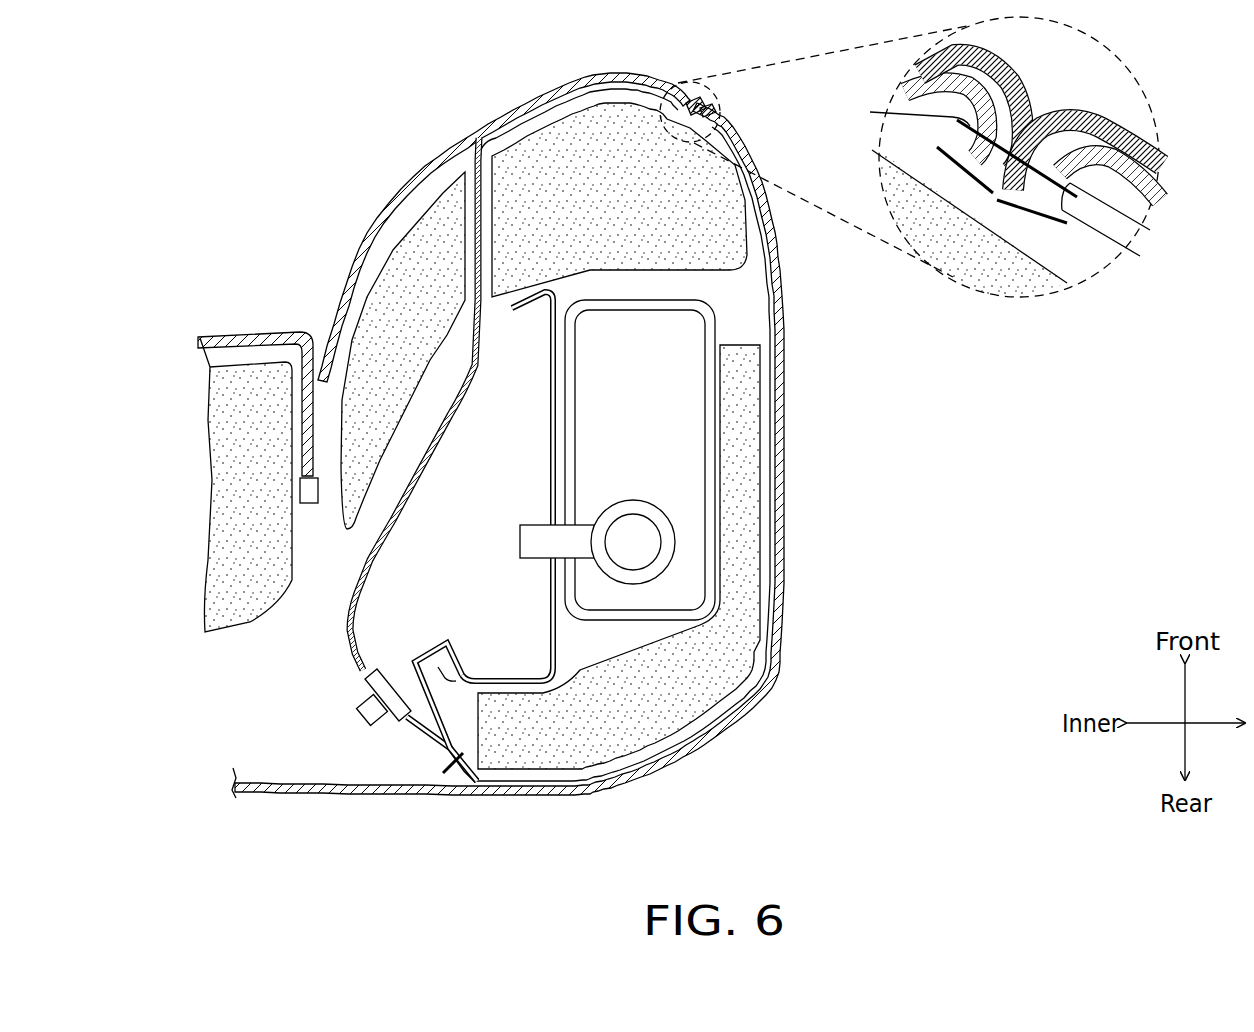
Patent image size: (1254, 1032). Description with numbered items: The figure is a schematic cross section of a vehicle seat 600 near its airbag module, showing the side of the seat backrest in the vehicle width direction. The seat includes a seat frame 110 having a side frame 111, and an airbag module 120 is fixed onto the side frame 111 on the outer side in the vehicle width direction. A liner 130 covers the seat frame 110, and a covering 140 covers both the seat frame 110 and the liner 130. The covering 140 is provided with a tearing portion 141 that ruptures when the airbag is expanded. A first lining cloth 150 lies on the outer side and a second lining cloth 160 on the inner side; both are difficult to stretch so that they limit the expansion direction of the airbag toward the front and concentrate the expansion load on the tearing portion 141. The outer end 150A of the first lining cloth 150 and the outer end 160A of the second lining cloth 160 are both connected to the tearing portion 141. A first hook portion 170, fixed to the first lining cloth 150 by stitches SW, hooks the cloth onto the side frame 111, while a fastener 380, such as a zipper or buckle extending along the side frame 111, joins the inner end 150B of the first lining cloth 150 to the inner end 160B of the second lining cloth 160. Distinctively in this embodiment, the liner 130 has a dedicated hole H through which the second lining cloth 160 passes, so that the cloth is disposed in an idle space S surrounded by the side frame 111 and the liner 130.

The seat frame 110 is at (526, 578).
The side frame 111 is at (522, 686).
The airbag module 120 is at (683, 333).
The liner 130 is at (533, 138).
The covering 140 is at (373, 238).
The tearing portion 141 is at (1004, 157).
The first lining cloth 150 is at (687, 747).
The outer end of the first lining cloth 150A is at (1110, 250).
The inner end of the first lining cloth 150B is at (407, 723).
The second lining cloth 160 is at (478, 150).
The outer end of the second lining cloth 160A is at (958, 122).
The inner end of the second lining cloth 160B is at (357, 677).
The first hook portion 170 is at (431, 648).
The fastener 380 is at (370, 712).
The vehicle seat 600 is at (857, 857).
The dedicated hole H is at (466, 211).
The idle space S is at (383, 613).
The stitches SW is at (450, 772).